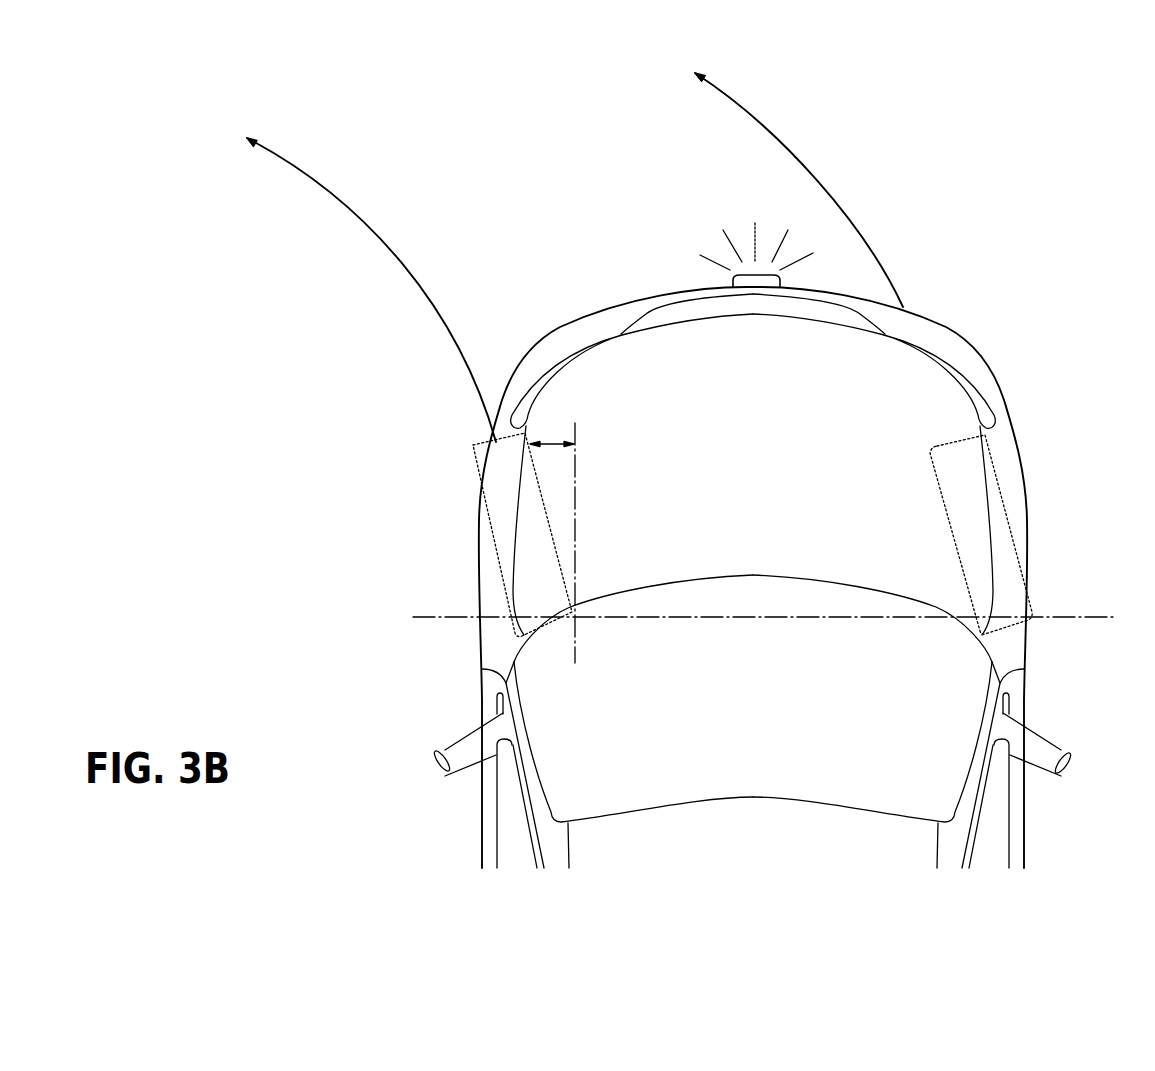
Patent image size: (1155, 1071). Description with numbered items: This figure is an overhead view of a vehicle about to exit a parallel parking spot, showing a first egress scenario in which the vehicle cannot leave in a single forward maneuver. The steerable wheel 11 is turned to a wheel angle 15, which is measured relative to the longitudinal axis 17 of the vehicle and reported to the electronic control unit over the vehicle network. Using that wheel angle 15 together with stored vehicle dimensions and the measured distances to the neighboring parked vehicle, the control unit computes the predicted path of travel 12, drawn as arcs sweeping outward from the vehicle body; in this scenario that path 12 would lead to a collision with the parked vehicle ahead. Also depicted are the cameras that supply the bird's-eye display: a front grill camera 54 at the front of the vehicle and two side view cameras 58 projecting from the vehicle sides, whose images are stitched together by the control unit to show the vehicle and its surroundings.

The wheel 11 is at (472, 469).
The predicted path of travel 12 is at (387, 238).
The wheel angle 15 is at (550, 440).
The longitudinal axis 17 is at (428, 615).
The front grill camera 54 is at (758, 283).
The side view cameras 58 is at (438, 760).